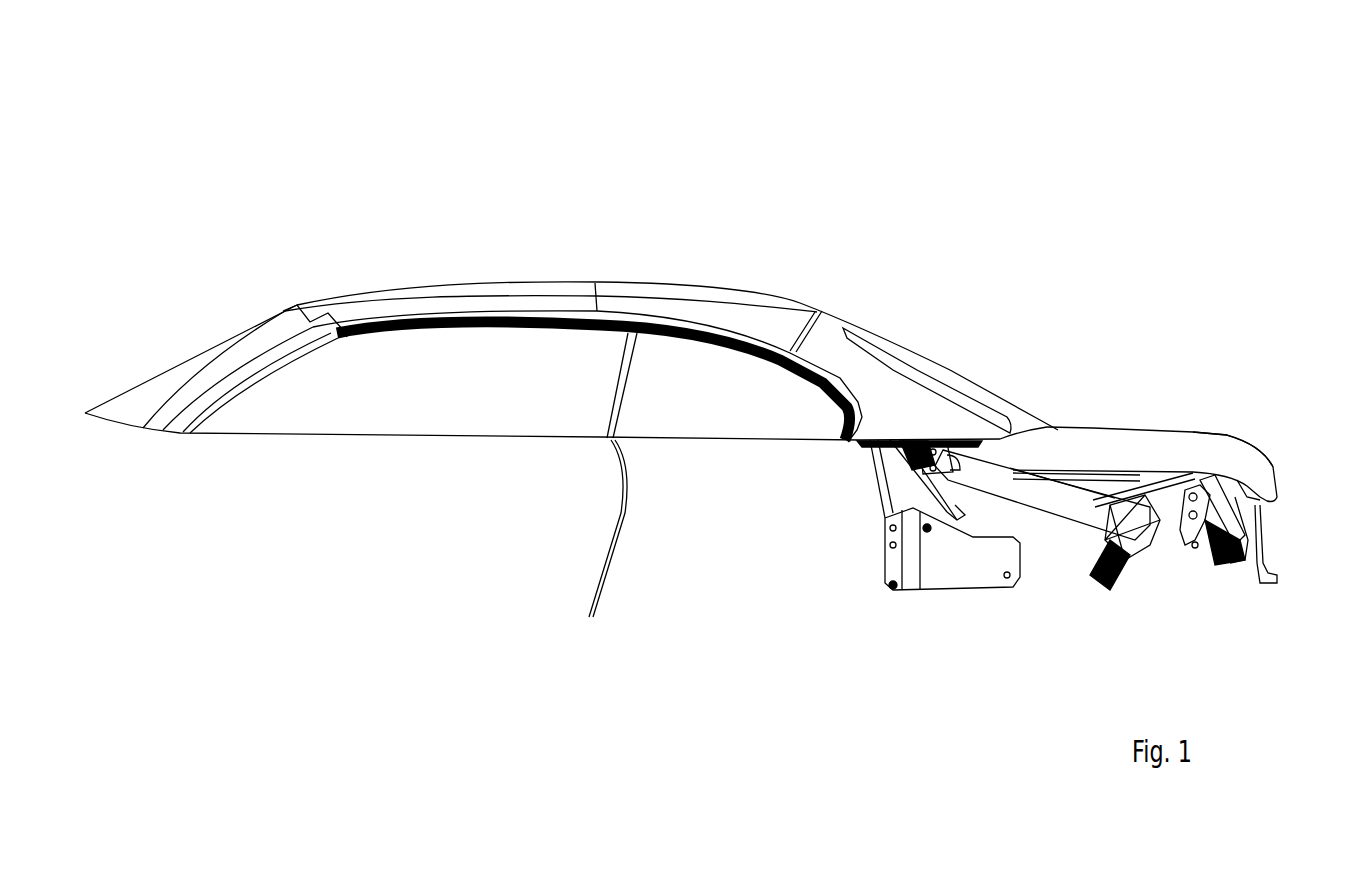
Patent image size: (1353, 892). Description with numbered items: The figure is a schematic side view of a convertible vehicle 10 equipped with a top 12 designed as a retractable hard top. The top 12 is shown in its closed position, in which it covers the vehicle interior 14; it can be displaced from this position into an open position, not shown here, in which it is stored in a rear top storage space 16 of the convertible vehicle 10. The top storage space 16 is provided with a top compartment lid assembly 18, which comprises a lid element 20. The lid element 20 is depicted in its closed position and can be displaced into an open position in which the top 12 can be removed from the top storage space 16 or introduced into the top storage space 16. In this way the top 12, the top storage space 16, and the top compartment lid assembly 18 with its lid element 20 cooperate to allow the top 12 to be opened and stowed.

The convertible vehicle 10 is at (1040, 197).
The top 12 is at (675, 295).
The vehicle interior 14 is at (477, 399).
The top storage space 16 is at (1063, 566).
The top compartment lid assembly 18 is at (1235, 433).
The lid element 20 is at (1102, 457).